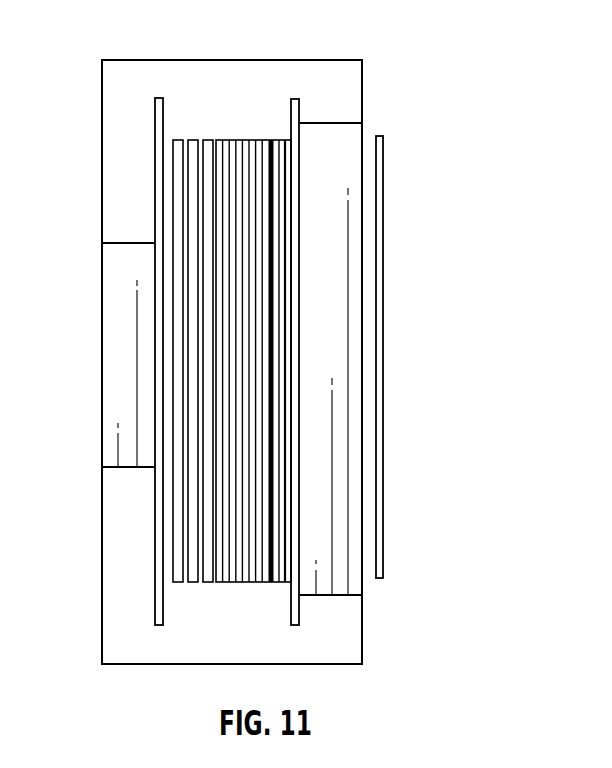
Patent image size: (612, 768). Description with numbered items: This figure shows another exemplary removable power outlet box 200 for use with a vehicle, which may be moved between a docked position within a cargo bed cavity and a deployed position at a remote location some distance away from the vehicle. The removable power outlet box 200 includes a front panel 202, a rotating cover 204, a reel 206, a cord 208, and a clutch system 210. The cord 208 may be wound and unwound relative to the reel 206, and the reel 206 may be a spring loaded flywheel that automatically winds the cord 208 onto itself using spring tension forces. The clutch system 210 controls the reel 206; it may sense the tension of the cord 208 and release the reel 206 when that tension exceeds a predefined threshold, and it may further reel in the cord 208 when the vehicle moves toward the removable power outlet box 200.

The removable power outlet box 200 is at (412, 50).
The front panel 202 is at (345, 278).
The rotating cover 204 is at (386, 205).
The reel 206 is at (290, 105).
The cord 208 is at (236, 218).
The clutch system 210 is at (123, 343).